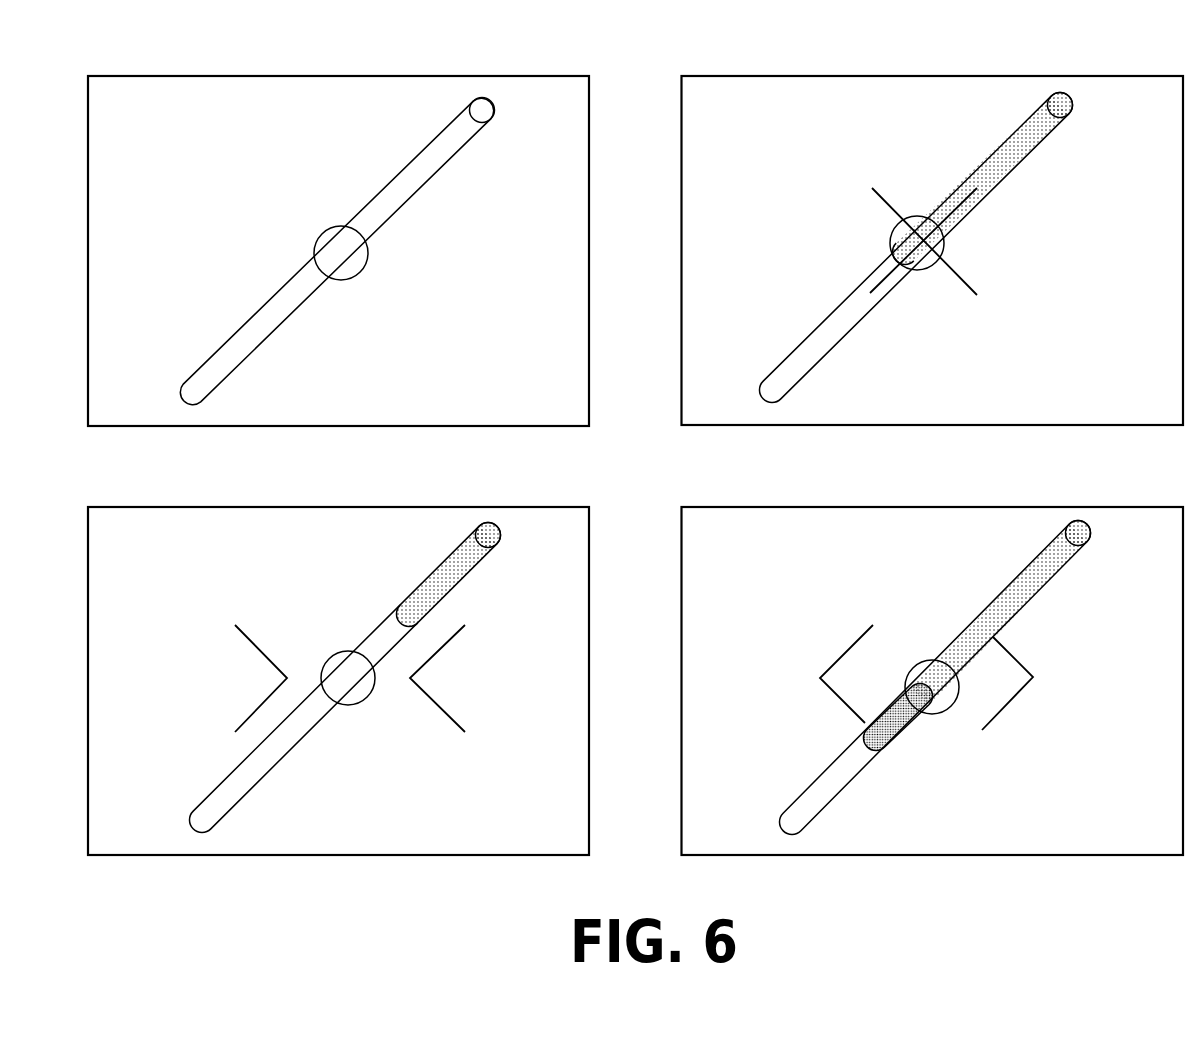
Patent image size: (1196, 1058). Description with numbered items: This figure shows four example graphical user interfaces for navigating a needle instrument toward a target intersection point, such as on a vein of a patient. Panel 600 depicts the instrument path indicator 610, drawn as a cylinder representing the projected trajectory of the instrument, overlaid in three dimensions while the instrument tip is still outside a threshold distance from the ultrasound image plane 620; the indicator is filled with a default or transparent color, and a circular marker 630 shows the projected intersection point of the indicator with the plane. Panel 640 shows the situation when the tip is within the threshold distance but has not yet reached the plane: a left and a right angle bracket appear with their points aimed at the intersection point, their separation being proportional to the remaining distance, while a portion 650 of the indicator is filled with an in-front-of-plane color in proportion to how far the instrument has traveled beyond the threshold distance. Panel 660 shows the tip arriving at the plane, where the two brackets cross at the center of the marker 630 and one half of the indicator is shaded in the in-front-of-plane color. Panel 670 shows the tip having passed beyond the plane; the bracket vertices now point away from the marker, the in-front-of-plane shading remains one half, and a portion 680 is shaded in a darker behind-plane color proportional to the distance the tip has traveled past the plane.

The panel 600 is at (303, 233).
The instrument path indicator 610 is at (228, 345).
The ultrasound image plane 620 is at (87, 295).
The marker 630 is at (318, 235).
The panel 640 is at (338, 653).
The portion of the instrument path indicator 650 is at (476, 530).
The panel 660 is at (933, 233).
The panel 670 is at (933, 666).
The portion of the instrument path indicator 680 is at (893, 738).